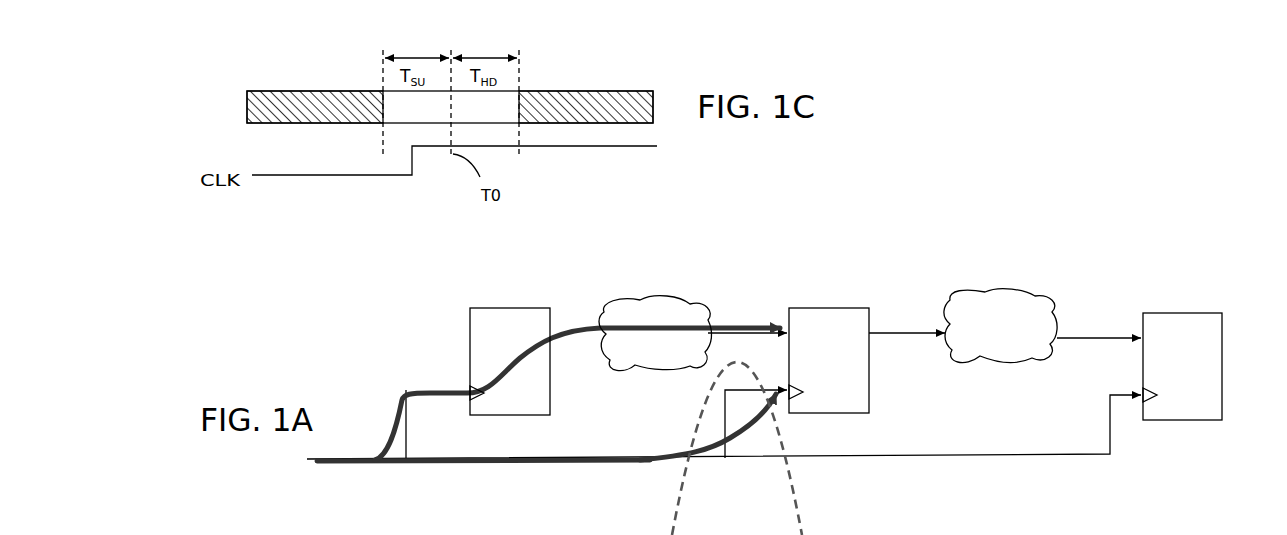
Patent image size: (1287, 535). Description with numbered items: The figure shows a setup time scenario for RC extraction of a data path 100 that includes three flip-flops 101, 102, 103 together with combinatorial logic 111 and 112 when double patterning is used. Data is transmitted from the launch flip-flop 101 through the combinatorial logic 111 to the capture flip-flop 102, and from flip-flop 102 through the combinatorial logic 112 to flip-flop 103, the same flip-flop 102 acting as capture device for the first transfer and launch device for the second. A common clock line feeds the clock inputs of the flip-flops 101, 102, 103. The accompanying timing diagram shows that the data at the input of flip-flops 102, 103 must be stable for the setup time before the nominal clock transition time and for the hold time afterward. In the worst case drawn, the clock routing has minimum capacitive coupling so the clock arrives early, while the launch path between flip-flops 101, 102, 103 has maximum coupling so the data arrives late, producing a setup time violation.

The circuit 100 is at (1062, 198).
The launch flip-flop 101 is at (508, 308).
The capture flip-flop 102 is at (829, 308).
The capture flip-flop 103 is at (1182, 313).
The combinatorial logic 111 is at (668, 308).
The combinatorial logic 112 is at (1027, 295).